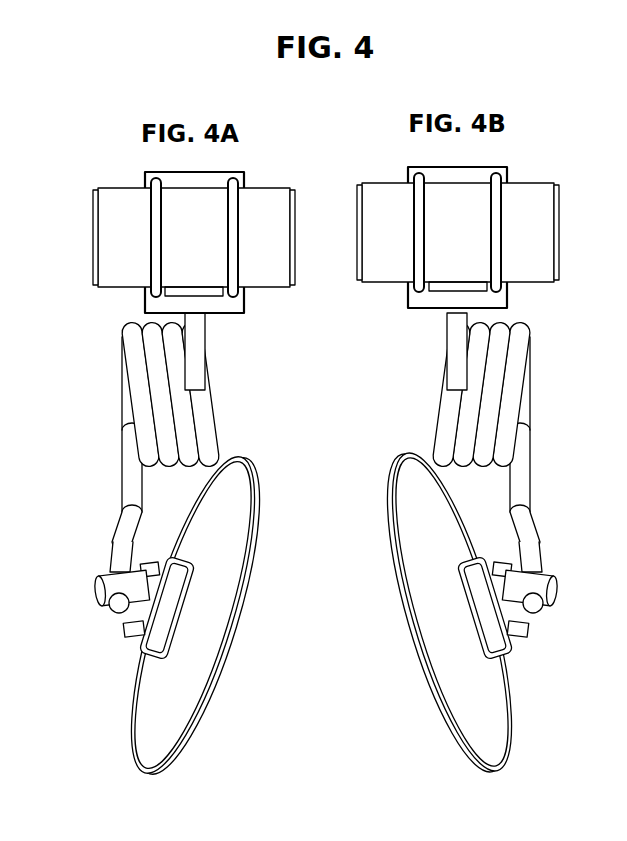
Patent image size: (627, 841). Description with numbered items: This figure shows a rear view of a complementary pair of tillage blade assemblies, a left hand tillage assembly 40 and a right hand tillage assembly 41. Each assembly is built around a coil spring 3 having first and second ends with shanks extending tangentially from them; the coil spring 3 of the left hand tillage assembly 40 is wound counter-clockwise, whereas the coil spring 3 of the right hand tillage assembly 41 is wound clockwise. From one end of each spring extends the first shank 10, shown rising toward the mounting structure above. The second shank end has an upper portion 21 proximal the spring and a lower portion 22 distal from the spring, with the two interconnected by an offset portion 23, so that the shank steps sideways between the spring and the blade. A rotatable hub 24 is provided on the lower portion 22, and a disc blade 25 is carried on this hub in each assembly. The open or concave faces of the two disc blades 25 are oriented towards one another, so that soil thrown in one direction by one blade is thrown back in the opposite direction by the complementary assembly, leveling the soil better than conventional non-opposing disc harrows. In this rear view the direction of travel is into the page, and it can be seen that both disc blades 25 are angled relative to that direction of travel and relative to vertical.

In FIG. 4A, the coil spring 3 is at (176, 462).
In FIG. 4B, the coil spring 3 is at (480, 460).
In FIG. 4A, the first shank 10 is at (197, 329).
In FIG. 4B, the first shank 10 is at (460, 335).
In FIG. 4A, the upper portion 21 is at (128, 455).
In FIG. 4B, the upper portion 21 is at (520, 453).
In FIG. 4A, the lower portion 22 is at (122, 613).
In FIG. 4B, the lower portion 22 is at (532, 607).
In FIG. 4A, the offset portion 23 is at (125, 525).
In FIG. 4B, the offset portion 23 is at (527, 528).
In FIG. 4A, the rotatable hub 24 is at (117, 587).
In FIG. 4B, the rotatable hub 24 is at (530, 575).
In FIG. 4A, the disc blade 25 is at (132, 710).
In FIG. 4B, the disc blade 25 is at (517, 722).
In FIG. 4B, the left hand tillage assembly 40 is at (422, 408).
In FIG. 4A, the right hand tillage assembly 41 is at (245, 396).